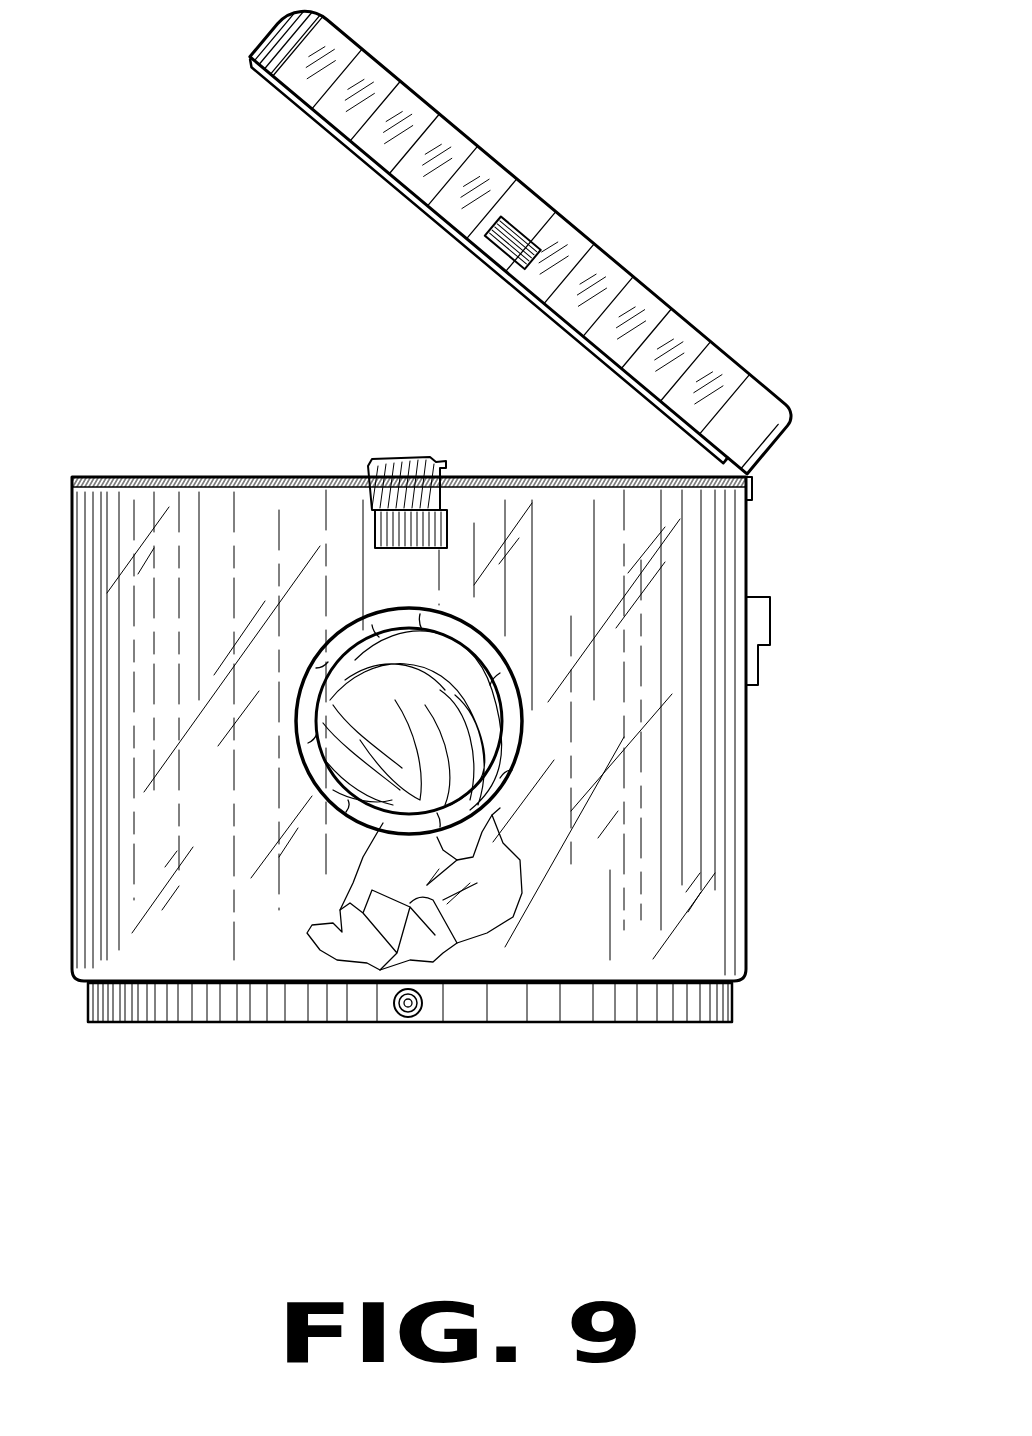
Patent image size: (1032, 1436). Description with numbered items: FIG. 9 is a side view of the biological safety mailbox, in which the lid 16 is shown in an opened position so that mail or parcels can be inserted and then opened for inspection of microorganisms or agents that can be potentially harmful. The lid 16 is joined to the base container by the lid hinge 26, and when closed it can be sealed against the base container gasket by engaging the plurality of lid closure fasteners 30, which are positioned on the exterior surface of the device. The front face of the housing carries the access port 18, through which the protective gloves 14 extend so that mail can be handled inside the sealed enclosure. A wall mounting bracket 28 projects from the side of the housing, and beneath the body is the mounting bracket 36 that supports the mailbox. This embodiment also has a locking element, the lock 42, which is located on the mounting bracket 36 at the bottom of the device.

The protective gloves 14 is at (503, 859).
The lid 16 is at (458, 112).
The access port 18 is at (347, 627).
The lid hinge 26 is at (750, 478).
The wall mounting bracket 28 is at (770, 620).
The lid closure fasteners 30 is at (517, 225).
The mounting bracket 36 is at (282, 1020).
The lock 42 is at (417, 1013).